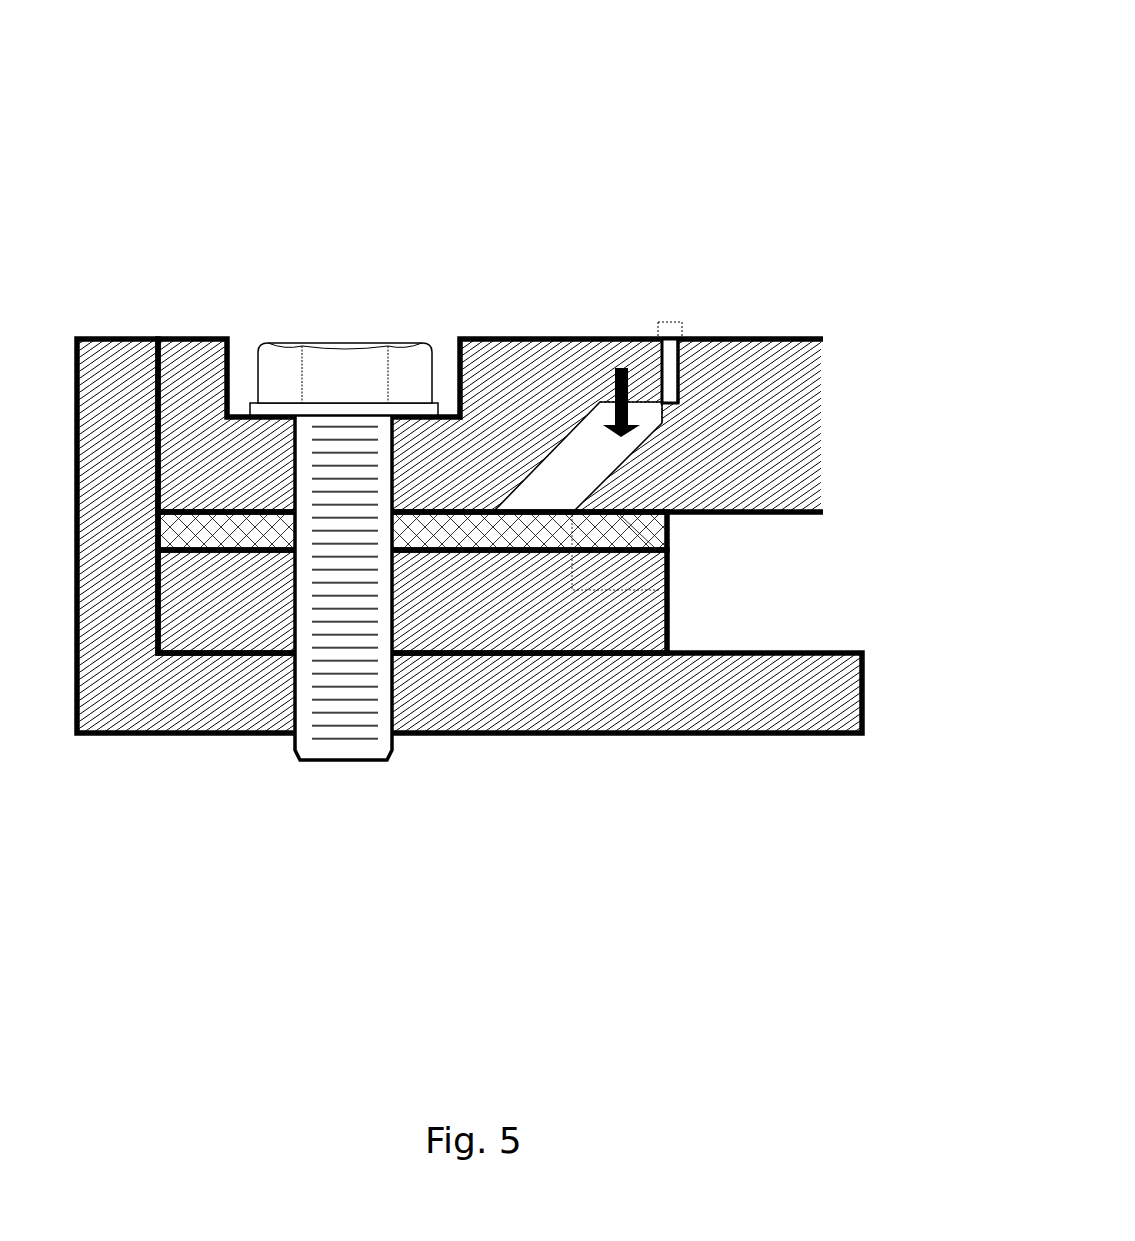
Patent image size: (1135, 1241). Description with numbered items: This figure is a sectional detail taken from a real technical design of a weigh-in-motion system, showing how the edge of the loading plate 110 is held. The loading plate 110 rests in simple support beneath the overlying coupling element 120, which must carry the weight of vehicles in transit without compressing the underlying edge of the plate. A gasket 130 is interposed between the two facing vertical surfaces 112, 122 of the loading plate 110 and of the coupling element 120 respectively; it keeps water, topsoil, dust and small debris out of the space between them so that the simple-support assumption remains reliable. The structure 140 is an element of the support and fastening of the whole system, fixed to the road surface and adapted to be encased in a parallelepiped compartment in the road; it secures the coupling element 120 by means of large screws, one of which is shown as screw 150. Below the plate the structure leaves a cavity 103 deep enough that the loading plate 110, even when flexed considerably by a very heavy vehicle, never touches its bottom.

The cavity 103 is at (798, 603).
The loading plate 110 is at (755, 360).
The vertical surface 112 is at (680, 382).
The coupling element 120 is at (520, 375).
The vertical surface 122 is at (662, 373).
The gasket 130 is at (667, 373).
The structure of support and fastening 140 is at (187, 698).
The screw 150 is at (347, 483).